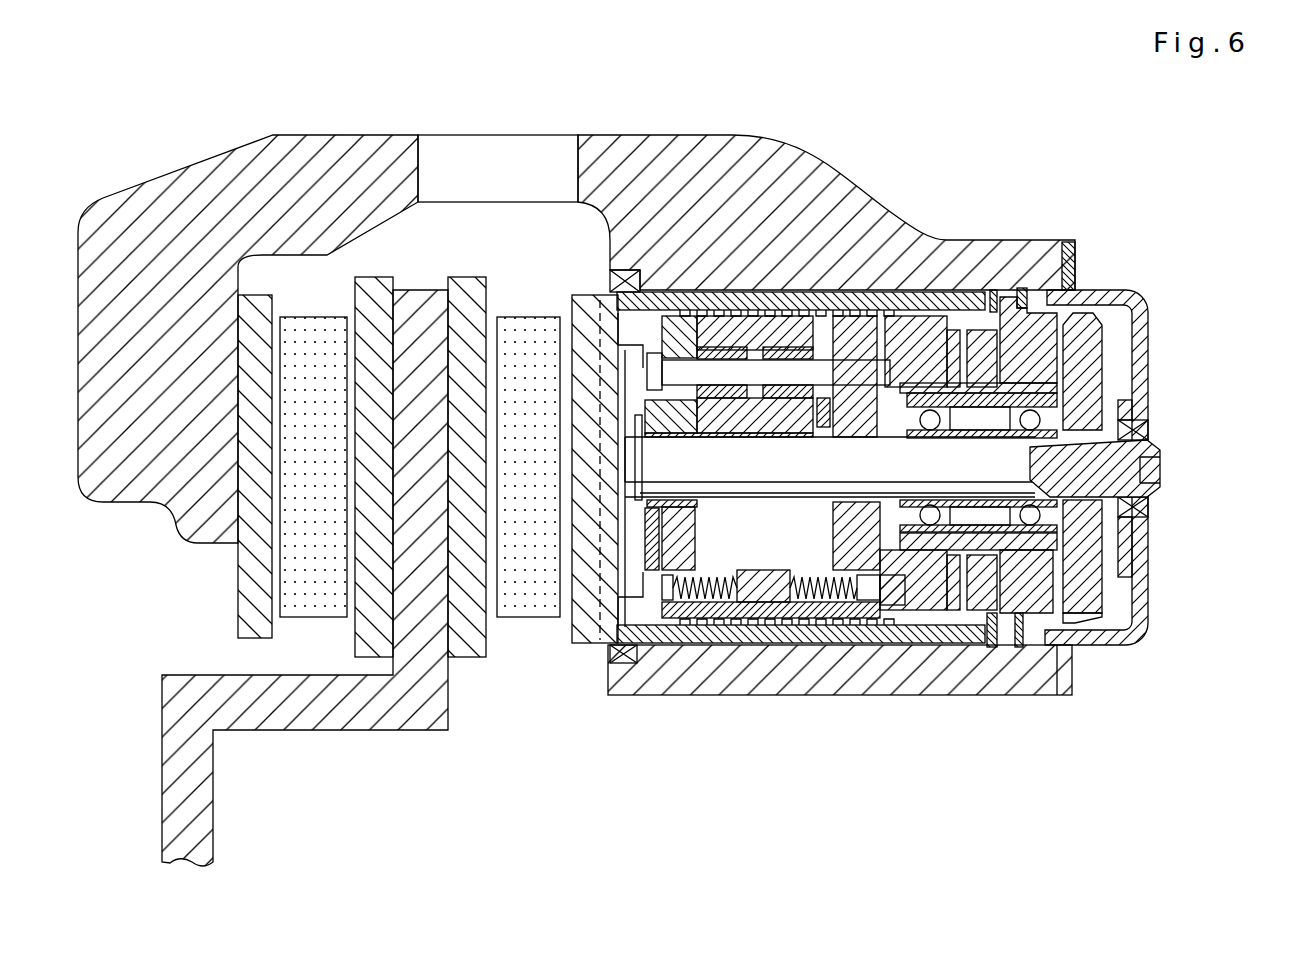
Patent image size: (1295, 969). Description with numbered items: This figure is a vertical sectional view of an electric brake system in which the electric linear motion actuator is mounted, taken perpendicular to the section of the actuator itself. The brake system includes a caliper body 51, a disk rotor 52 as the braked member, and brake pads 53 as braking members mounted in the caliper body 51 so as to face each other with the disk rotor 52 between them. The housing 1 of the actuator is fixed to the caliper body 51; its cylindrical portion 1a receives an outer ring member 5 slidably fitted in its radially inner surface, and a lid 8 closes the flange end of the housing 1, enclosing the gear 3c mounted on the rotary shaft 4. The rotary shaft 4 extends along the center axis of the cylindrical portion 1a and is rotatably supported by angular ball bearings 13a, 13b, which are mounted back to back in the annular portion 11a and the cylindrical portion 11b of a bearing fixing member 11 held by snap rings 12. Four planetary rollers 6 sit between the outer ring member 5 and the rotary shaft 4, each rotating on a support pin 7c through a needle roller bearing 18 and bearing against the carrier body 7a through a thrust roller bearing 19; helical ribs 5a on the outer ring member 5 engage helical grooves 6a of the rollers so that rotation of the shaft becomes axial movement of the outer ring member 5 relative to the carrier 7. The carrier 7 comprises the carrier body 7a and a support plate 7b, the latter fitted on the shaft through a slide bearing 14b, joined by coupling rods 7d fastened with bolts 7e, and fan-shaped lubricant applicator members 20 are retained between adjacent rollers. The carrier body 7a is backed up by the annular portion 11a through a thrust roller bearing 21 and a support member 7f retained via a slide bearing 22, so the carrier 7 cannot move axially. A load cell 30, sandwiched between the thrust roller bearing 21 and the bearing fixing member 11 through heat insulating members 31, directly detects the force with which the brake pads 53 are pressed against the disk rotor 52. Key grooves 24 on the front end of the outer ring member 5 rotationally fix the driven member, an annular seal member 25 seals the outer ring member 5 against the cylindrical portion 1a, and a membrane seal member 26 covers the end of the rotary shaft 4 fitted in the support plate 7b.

The housing 1 is at (1031, 234).
The cylindrical portion 1a is at (1040, 677).
The gear 3c is at (1092, 572).
The rotary shaft 4 is at (1162, 460).
The outer ring member 5 is at (667, 280).
The helical ribs 5a is at (773, 345).
The planetary rollers 6 is at (748, 330).
The helical grooves 6a is at (735, 318).
The carrier 7 is at (824, 551).
The carrier body 7a is at (838, 624).
The support plate 7b is at (620, 625).
The support pins 7c is at (846, 360).
The coupling rods 7d is at (754, 582).
The bolts 7e is at (800, 602).
The support member 7f is at (862, 607).
The lid 8 is at (1142, 606).
The bearing fixing member 11 is at (1075, 290).
The annular portion 11a is at (1020, 360).
The cylindrical portion 11b is at (940, 605).
The snap rings 12 is at (1033, 305).
The angular ball bearing 13a is at (1045, 655).
The angular ball bearing 13b is at (925, 552).
The slide bearing 14b is at (667, 520).
The needle roller bearing 18 is at (773, 437).
The thrust roller bearing 19 is at (838, 317).
The lubricant applicator members 20 is at (690, 645).
The thrust roller bearing 21 is at (913, 365).
The slide bearing 22 is at (574, 445).
The key grooves 24 is at (598, 640).
The annular seal member 25 is at (594, 292).
The seal member 26 is at (612, 472).
The load cell 30 is at (972, 330).
The heat insulating members 31 is at (988, 615).
The caliper body 51 is at (358, 170).
The disk rotor 52 is at (415, 318).
The brake pads 53 is at (306, 347).